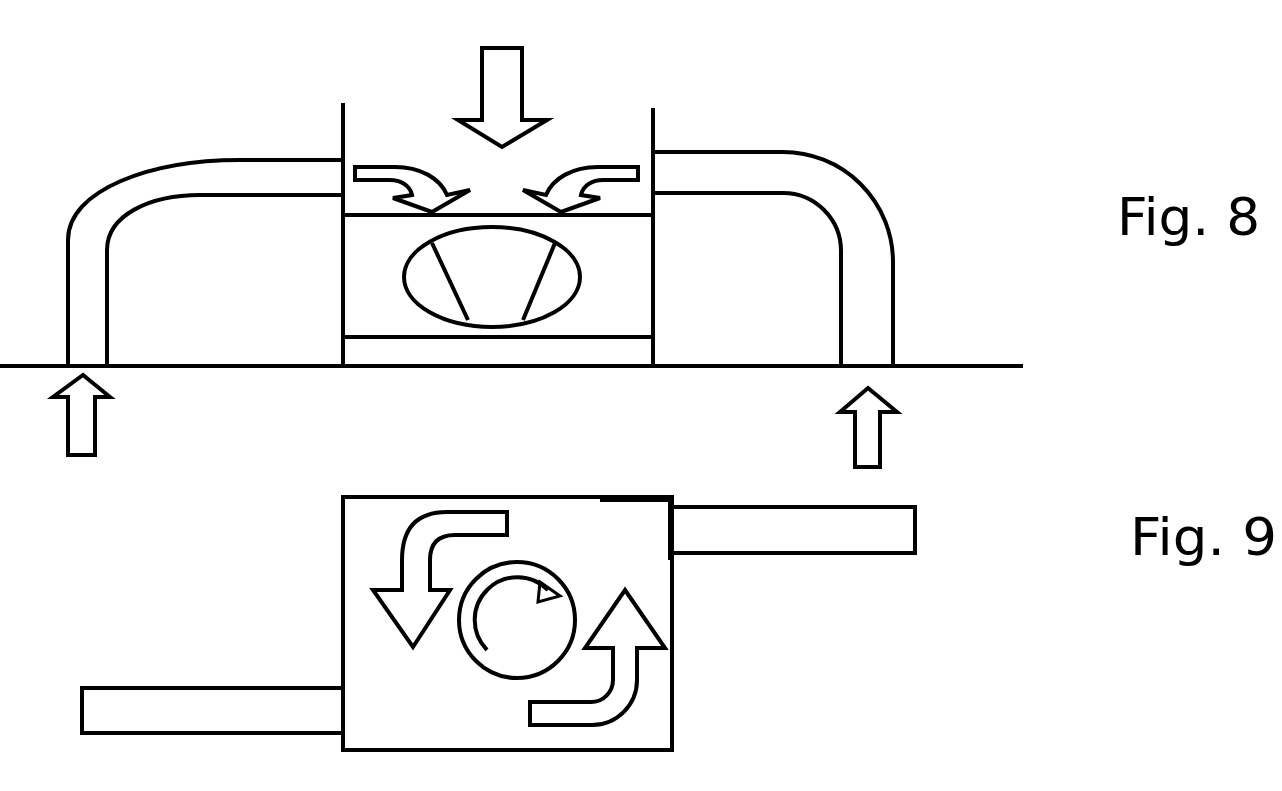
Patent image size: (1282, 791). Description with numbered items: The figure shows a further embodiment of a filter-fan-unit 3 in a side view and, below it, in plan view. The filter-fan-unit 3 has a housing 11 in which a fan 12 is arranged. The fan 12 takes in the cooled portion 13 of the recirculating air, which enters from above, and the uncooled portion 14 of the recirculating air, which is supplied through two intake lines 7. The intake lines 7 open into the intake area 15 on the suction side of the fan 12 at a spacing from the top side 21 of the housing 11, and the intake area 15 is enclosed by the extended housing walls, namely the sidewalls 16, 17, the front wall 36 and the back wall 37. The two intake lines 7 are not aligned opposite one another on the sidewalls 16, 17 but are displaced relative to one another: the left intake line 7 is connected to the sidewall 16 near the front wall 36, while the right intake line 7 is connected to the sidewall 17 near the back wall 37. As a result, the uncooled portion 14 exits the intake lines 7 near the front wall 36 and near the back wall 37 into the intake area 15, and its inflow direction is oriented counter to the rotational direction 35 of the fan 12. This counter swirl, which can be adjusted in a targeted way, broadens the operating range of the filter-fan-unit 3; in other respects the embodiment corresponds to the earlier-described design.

In FIG. 8, the filter-fan-unit 3 is at (322, 76).
In FIG. 9, the filter-fan-unit 3 is at (368, 463).
In FIG. 8, the intake line 7 is at (245, 175).
In FIG. 9, the intake line 7 is at (150, 710).
In FIG. 8, the housing 11 is at (663, 237).
In FIG. 9, the housing 11 is at (328, 642).
In FIG. 8, the fan 12 is at (483, 272).
In FIG. 8, the cooled portion of the recirculating air 13 is at (500, 85).
In FIG. 8, the uncooled portion of the recirculating air 14 is at (378, 172).
In FIG. 9, the uncooled portion of the recirculating air 14 is at (447, 523).
In FIG. 9, the intake area 15 is at (615, 548).
In FIG. 8, the sidewall 16 is at (338, 277).
In FIG. 9, the sidewall 16 is at (338, 562).
In FIG. 8, the sidewall 17 is at (653, 287).
In FIG. 9, the sidewall 17 is at (672, 592).
In FIG. 8, the top side 21 is at (617, 213).
In FIG. 9, the rotational direction 35 is at (527, 580).
In FIG. 9, the front wall 36 is at (397, 747).
In FIG. 9, the back wall 37 is at (625, 500).